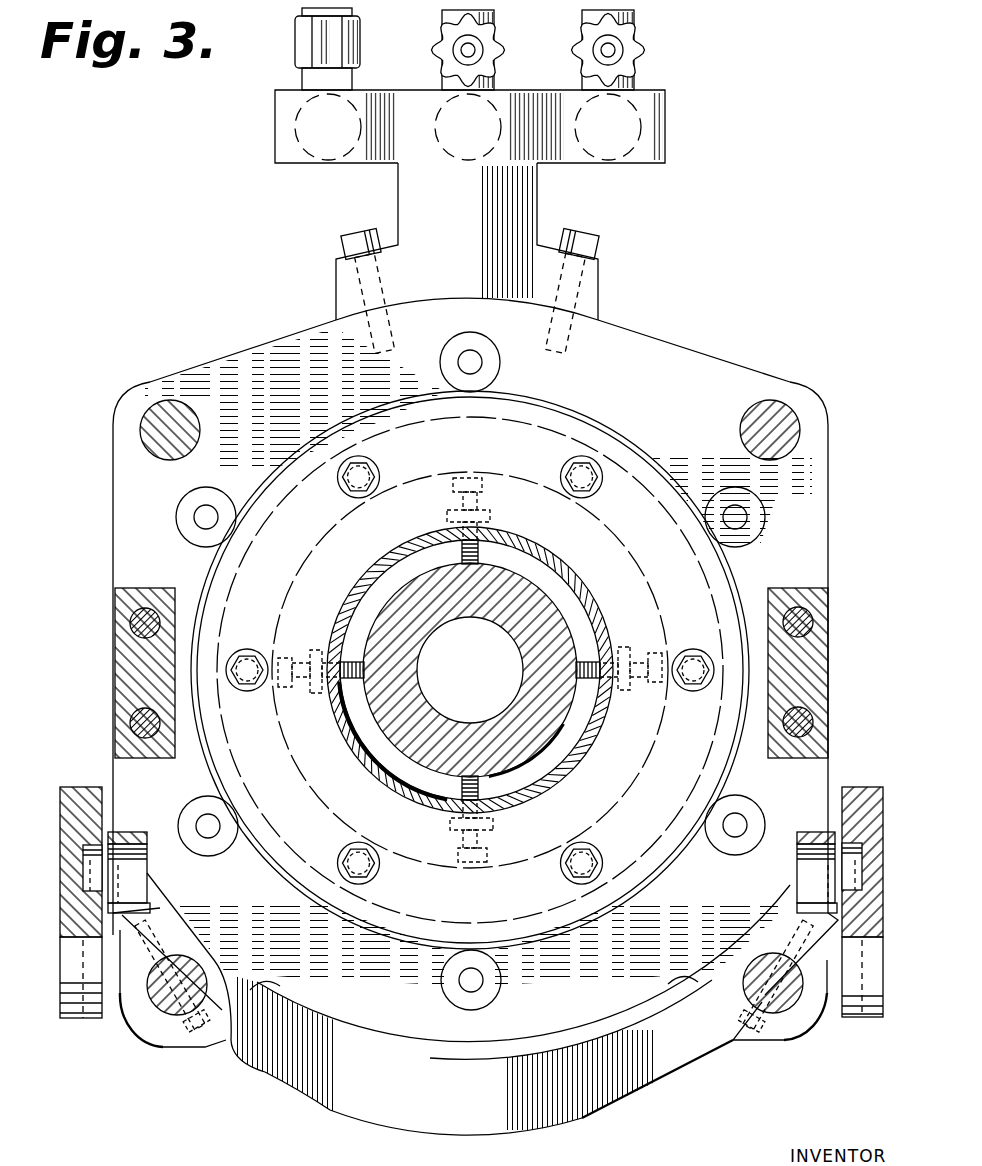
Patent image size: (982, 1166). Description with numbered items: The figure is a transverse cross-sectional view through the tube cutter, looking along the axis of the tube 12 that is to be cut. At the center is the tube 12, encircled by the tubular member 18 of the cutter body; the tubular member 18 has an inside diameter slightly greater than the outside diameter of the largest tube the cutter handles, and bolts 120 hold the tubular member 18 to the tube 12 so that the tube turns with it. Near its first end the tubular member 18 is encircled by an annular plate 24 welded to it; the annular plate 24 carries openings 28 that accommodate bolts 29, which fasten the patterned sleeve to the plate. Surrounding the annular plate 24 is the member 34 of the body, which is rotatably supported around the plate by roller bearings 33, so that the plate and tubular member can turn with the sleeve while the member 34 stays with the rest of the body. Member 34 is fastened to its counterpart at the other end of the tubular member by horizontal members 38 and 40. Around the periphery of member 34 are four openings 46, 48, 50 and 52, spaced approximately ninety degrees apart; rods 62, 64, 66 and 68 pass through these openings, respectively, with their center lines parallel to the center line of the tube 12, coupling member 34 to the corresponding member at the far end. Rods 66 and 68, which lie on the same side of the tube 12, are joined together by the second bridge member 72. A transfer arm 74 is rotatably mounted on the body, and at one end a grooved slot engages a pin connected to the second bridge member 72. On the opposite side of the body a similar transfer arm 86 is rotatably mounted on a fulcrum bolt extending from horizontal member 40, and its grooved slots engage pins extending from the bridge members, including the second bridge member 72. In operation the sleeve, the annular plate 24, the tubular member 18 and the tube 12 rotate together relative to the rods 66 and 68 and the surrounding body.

The tube 12 is at (488, 604).
The tubular member 18 is at (571, 569).
The annular plate 24 is at (645, 525).
The openings 28 is at (377, 470).
The bolts 29 is at (341, 491).
The roller bearings 33 is at (482, 345).
The member 34 is at (644, 345).
The horizontal member 38 is at (815, 667).
The horizontal member 40 is at (125, 655).
The opening 46 is at (795, 412).
The opening 48 is at (148, 408).
The opening 50 is at (163, 1017).
The opening 52 is at (790, 1010).
The rod 62 is at (756, 444).
The rod 64 is at (156, 444).
The rod 66 is at (163, 999).
The rod 68 is at (759, 997).
The second bridge member 72 is at (422, 1115).
The transfer arm 74 is at (860, 797).
The transfer arm 86 is at (107, 788).
The bolts 120 is at (482, 480).